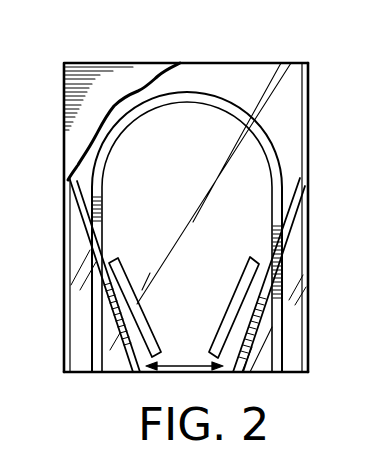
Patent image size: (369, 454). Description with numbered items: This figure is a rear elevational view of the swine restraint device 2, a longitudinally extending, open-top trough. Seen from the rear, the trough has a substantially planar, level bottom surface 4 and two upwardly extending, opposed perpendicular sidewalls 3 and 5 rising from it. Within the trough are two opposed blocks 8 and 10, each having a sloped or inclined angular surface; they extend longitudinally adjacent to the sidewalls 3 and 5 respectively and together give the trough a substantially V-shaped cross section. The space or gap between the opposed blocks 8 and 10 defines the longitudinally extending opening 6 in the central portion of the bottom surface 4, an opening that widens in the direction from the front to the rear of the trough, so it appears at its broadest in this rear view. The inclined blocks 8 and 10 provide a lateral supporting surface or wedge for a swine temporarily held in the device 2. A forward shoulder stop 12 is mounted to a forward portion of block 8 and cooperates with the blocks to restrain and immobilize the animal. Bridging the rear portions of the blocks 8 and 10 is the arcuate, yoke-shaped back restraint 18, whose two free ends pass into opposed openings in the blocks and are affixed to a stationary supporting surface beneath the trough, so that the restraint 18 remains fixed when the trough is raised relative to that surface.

The swine restraint device 2 is at (50, 191).
The sidewall 3 is at (66, 88).
The bottom surface 4 is at (123, 374).
The sidewall 5 is at (308, 147).
The opening 6 is at (184, 364).
The block 8 is at (117, 346).
The block 10 is at (247, 353).
The forward shoulder stop 12 is at (118, 294).
The back restraint 18 is at (218, 97).